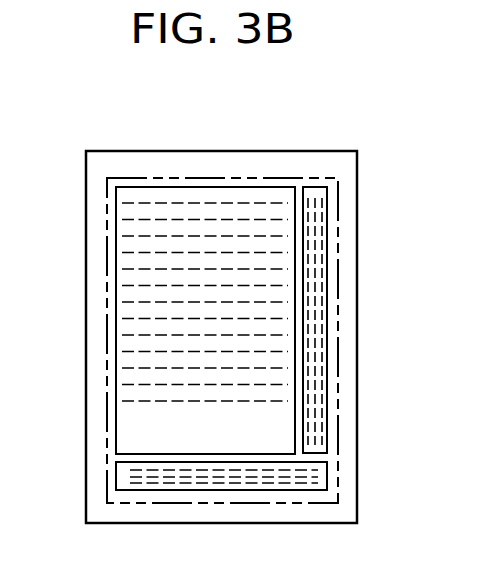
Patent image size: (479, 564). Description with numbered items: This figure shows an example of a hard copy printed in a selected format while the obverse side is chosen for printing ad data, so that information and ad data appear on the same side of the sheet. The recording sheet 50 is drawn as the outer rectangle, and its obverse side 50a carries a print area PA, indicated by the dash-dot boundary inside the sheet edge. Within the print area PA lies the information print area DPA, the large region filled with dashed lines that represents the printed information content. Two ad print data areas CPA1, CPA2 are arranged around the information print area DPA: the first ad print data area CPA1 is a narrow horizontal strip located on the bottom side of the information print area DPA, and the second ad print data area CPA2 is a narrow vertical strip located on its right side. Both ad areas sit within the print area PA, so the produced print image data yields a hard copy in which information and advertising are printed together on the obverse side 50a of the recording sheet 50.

The recording sheet 50 is at (248, 152).
The obverse side 50a is at (128, 168).
The print area PA is at (337, 243).
The information print area DPA is at (123, 368).
The ad print data area CPA1 is at (330, 480).
The ad print data area CPA2 is at (327, 362).